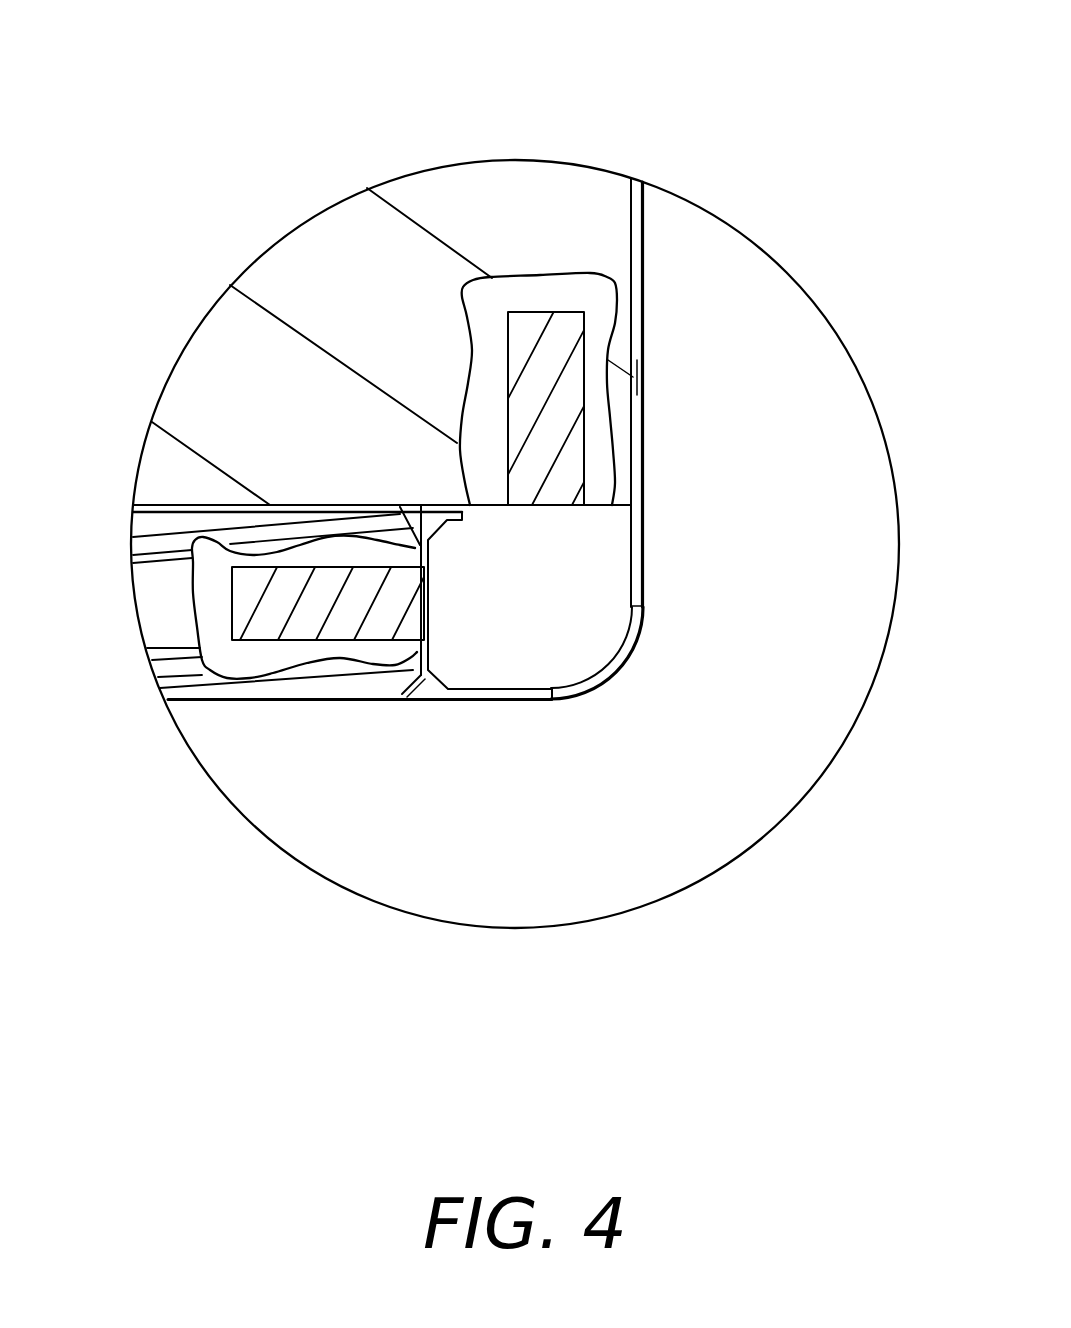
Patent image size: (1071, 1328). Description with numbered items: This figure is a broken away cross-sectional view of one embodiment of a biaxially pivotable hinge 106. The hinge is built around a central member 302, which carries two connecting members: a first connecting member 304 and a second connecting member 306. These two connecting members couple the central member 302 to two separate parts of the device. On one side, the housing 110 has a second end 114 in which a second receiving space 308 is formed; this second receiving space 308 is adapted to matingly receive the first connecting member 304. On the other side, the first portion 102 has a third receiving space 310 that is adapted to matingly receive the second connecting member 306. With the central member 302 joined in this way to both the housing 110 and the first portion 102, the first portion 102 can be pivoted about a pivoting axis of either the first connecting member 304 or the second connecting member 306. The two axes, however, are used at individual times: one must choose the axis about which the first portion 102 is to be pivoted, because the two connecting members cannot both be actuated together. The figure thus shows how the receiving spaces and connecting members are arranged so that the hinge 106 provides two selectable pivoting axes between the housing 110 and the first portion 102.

The biaxially pivotable hinge 106 is at (814, 61).
The first portion 102 is at (618, 252).
The central member 302 is at (610, 658).
The second connecting member 306 is at (583, 432).
The third receiving space 310 is at (604, 341).
The second receiving space 308 is at (207, 597).
The first connecting member 304 is at (292, 642).
The housing 110 is at (345, 655).
The second end 114 is at (403, 650).